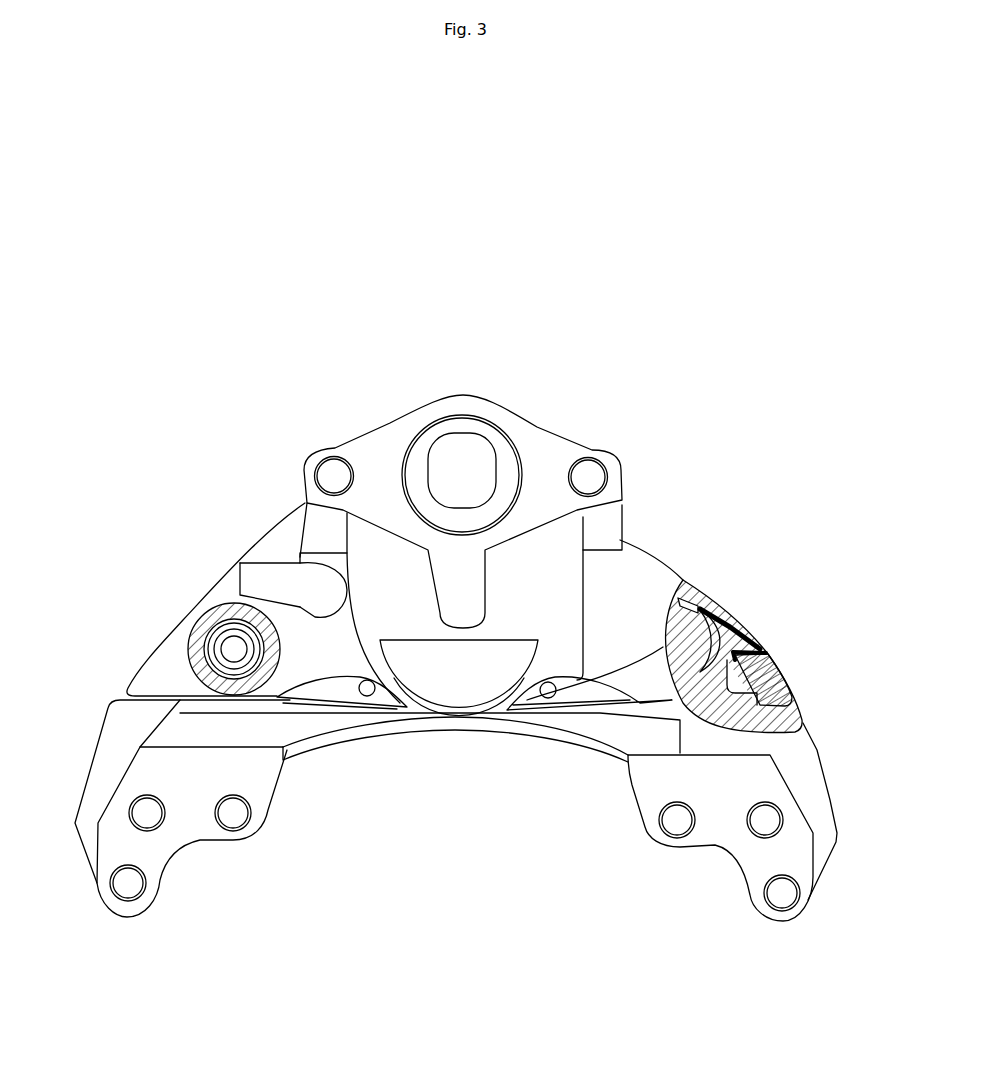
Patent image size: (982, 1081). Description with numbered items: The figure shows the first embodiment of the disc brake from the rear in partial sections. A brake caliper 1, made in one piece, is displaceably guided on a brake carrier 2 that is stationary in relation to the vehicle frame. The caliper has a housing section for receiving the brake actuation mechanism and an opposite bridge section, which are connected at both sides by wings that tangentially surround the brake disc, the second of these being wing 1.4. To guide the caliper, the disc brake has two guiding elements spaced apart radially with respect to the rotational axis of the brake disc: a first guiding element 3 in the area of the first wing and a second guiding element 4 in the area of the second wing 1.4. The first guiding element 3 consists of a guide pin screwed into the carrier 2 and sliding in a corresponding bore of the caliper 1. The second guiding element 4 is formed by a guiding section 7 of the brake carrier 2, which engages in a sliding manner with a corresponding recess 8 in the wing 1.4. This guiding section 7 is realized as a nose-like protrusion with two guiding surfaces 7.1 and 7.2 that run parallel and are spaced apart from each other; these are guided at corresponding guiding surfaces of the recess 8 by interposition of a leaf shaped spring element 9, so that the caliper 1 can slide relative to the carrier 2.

The brake caliper 1 is at (140, 676).
The second wing 1.4 is at (773, 683).
The brake carrier 2 is at (162, 833).
The first guiding element 3 is at (193, 487).
The second guiding element 4 is at (770, 525).
The guiding section 7 is at (506, 767).
The first guiding surface 7.1 is at (733, 613).
The second guiding surface 7.2 is at (735, 620).
The recess 8 is at (765, 650).
The leaf shaped spring element 9 is at (735, 607).